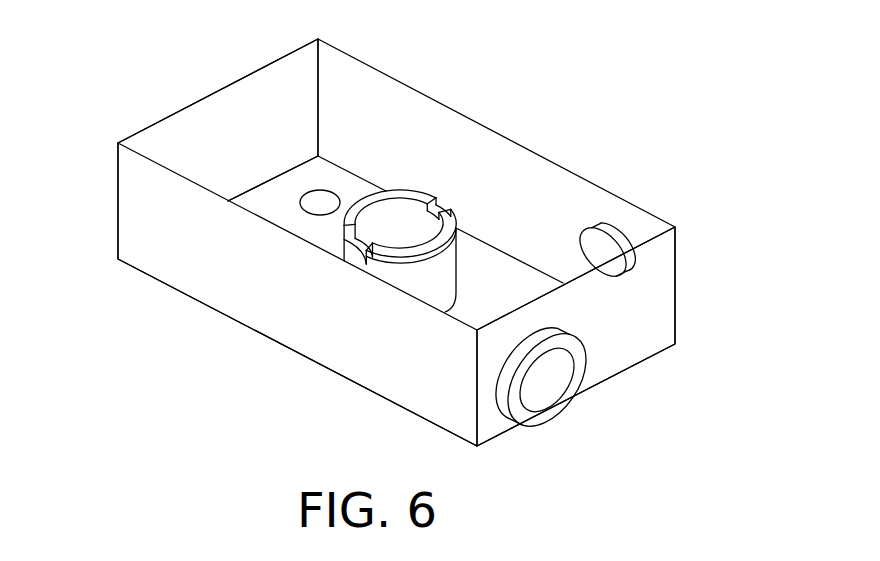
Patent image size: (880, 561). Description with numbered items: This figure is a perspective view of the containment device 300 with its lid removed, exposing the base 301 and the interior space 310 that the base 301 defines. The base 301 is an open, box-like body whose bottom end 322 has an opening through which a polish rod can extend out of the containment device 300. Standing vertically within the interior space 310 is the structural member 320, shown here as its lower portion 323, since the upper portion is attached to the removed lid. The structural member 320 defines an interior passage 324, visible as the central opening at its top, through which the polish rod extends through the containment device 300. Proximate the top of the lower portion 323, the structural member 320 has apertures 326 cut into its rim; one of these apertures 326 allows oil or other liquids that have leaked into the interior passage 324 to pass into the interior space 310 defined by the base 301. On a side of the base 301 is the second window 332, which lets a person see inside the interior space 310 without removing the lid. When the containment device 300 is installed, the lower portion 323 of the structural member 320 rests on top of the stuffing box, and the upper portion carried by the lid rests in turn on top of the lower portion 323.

The containment device 300 is at (616, 149).
The base 301 is at (638, 335).
The interior space 310 is at (273, 118).
The structural member 320 is at (448, 255).
The bottom end 322 is at (213, 290).
The lower portion 323 is at (410, 270).
The interior passage 324 is at (395, 217).
The apertures 326 is at (443, 203).
The second window 332 is at (606, 245).